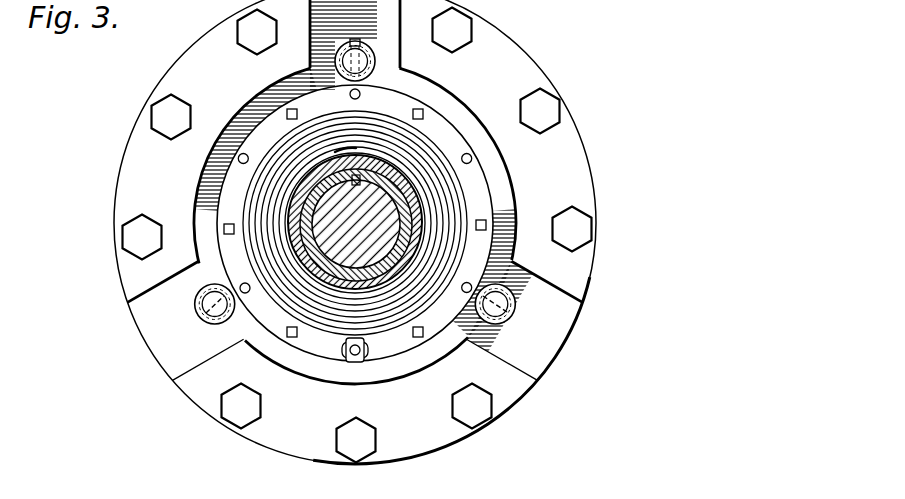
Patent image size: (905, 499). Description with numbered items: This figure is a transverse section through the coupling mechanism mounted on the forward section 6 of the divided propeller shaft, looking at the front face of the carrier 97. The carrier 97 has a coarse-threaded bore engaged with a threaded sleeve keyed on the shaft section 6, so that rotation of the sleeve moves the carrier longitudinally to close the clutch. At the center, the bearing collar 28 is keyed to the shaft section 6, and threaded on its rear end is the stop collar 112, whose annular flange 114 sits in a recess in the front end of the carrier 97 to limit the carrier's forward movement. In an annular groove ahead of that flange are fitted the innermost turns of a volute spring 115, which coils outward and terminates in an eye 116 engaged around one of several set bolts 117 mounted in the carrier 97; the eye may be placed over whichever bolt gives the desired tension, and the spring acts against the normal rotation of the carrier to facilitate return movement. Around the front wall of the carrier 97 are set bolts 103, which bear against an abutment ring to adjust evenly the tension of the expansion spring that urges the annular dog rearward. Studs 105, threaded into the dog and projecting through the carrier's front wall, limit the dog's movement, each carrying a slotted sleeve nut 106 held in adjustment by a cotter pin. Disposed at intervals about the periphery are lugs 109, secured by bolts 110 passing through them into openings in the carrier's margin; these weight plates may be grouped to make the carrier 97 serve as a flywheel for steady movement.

The forward section of the propeller shaft 6 is at (369, 245).
The collar 28 is at (413, 213).
The carrier 97 is at (172, 363).
The set bolts 103 is at (292, 340).
The studs 105 is at (216, 311).
The sleeve nut 106 is at (206, 300).
The lugs 109 is at (133, 175).
The bolts 110 is at (163, 117).
The stop collar 112 is at (393, 177).
The annular flange 114 is at (478, 328).
The volute spring 115 is at (232, 173).
The eye 116 is at (360, 364).
The set bolt 117 is at (247, 294).